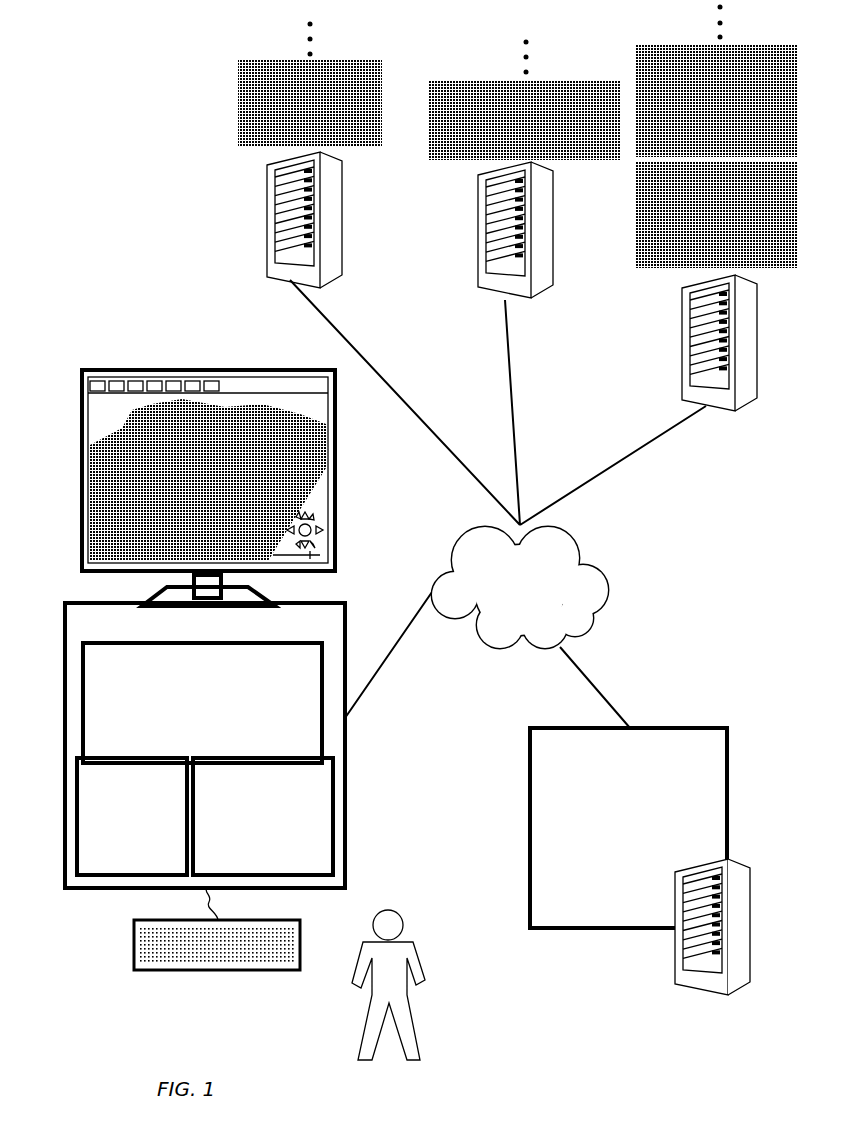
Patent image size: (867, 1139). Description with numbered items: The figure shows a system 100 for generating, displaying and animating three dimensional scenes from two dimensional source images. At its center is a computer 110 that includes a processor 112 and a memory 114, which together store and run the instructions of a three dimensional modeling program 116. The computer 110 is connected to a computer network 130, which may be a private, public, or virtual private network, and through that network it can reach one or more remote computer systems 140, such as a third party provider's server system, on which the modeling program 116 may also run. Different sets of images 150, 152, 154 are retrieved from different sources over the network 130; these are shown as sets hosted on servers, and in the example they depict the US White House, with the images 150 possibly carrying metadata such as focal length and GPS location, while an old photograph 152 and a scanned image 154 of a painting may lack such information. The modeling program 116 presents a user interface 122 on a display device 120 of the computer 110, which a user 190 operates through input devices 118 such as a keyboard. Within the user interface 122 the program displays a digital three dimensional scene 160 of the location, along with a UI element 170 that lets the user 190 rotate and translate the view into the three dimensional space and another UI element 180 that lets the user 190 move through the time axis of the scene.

The system 100 is at (78, 58).
The computer 110 is at (338, 631).
The processor 112 is at (118, 841).
The memory 114 is at (249, 841).
The 3D modeling program 116 is at (188, 725).
The input devices 118 is at (135, 943).
The display device 120 is at (180, 367).
The user interface 122 is at (232, 375).
The computer network 130 is at (603, 570).
The remote computer systems 140 is at (616, 897).
The images 150 is at (622, 48).
The old photograph 152 is at (472, 66).
The scanned image 154 is at (266, 50).
The digital 3D scene 160 is at (99, 428).
The UI element 170 is at (326, 522).
The UI element 180 is at (326, 560).
The user 190 is at (422, 960).